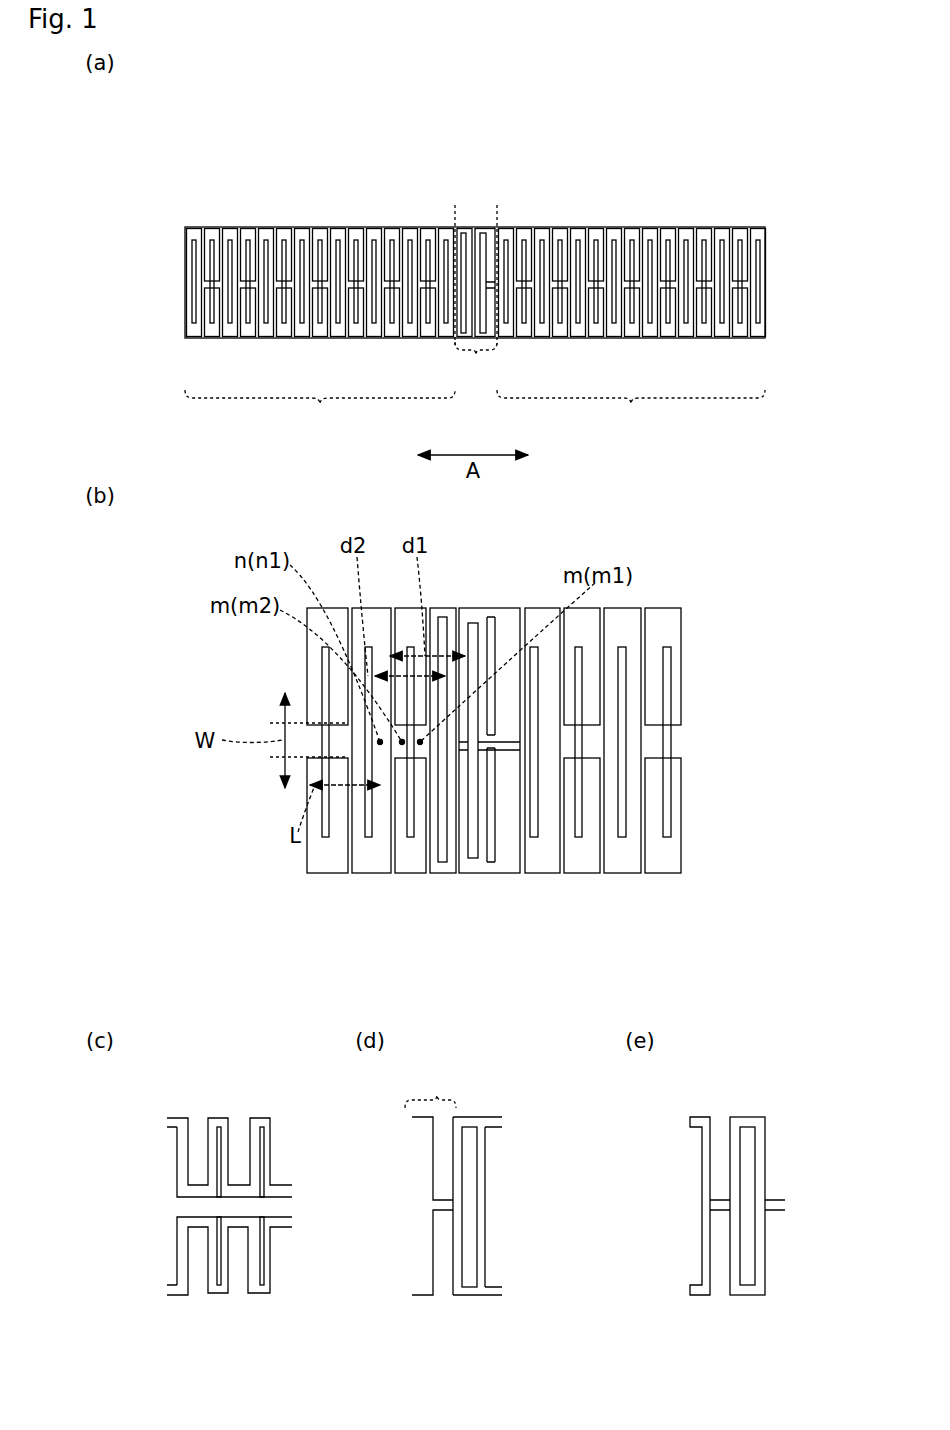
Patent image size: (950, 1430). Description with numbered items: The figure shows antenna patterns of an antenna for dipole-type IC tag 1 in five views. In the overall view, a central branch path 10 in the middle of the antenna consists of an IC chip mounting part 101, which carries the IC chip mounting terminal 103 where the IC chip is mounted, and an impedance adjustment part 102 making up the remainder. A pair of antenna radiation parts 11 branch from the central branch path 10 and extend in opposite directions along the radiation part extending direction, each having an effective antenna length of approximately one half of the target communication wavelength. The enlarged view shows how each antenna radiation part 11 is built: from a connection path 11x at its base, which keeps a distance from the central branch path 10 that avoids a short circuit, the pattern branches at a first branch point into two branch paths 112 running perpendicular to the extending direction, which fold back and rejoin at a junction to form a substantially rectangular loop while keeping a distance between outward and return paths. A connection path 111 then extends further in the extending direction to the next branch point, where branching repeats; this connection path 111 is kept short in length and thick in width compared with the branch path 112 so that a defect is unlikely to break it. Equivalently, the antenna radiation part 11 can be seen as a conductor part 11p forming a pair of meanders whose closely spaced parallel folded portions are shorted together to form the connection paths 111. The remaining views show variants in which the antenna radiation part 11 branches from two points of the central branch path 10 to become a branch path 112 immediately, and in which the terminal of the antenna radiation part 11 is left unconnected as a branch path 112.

The antenna for dipole-type IC tag 1 is at (473, 155).
The central branch path 10 is at (473, 400).
The antenna radiation part 11 is at (475, 749).
The conductor part 11p is at (177, 1252).
The connection path 11x is at (476, 830).
The IC chip mounting part 101 is at (455, 210).
The impedance adjustment part 102 is at (476, 357).
The IC chip mounting terminal 103 is at (479, 222).
The connection path 111 is at (368, 840).
The branch path 112 is at (690, 1290).